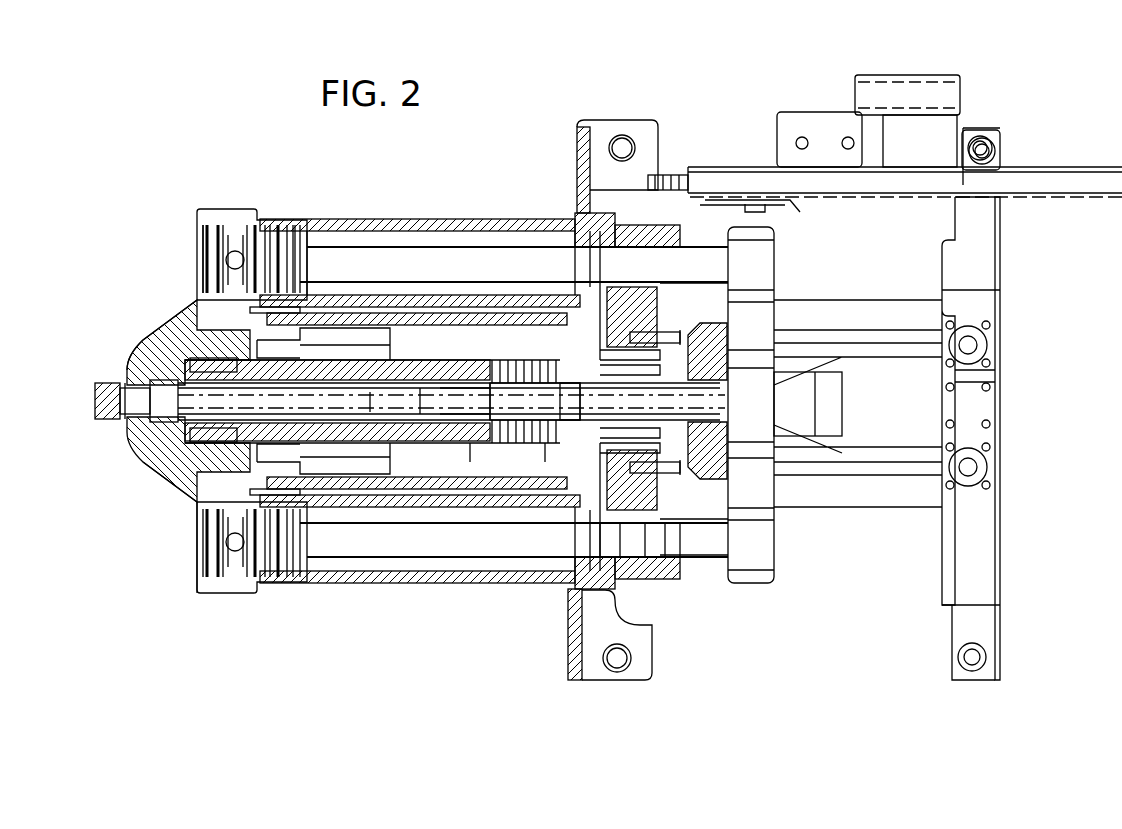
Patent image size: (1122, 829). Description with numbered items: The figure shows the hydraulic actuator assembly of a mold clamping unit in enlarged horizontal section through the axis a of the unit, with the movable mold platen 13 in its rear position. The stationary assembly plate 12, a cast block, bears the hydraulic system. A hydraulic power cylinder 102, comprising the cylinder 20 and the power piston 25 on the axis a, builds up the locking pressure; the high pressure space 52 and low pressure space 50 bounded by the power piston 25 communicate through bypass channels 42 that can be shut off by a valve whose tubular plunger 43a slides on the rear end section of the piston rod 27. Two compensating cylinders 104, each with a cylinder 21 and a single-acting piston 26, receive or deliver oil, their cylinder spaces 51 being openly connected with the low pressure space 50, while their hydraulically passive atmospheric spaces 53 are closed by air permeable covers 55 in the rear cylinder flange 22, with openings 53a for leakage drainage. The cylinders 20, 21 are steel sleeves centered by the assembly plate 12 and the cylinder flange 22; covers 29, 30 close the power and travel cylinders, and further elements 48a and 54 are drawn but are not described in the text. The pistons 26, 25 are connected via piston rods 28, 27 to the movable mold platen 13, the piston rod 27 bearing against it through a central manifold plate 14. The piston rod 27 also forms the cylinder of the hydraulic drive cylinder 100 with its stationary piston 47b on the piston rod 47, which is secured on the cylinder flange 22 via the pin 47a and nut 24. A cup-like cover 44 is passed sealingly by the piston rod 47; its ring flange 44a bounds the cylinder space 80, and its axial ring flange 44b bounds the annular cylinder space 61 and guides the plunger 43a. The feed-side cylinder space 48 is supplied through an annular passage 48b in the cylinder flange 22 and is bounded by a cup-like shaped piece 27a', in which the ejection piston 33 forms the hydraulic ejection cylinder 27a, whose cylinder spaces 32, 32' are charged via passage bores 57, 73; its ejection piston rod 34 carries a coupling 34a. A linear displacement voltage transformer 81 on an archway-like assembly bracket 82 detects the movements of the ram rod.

The assembly plate 12 is at (598, 140).
The movable mold platen 13 is at (884, 258).
The central manifold plate 14 is at (705, 330).
The cylinder 20 is at (400, 583).
The cylinder 21 is at (462, 219).
The cylinder flange 22 is at (162, 332).
The nut 24 is at (120, 413).
The power piston 25 is at (200, 515).
The piston 26 is at (300, 240).
The piston rod 27 is at (365, 540).
The hydraulic ejection cylinder 27a is at (514, 540).
The cup-like shaped piece 27a' is at (514, 301).
The piston rod 28 is at (530, 245).
The cover 29 is at (678, 432).
The cover 30 is at (655, 235).
The cylinder space 32 is at (611, 401).
The cylinder space 32' is at (494, 449).
The ejection piston 33 is at (545, 430).
The ejection piston rod 34 is at (780, 395).
The coupling 34a is at (828, 372).
The bypass channels 42 is at (330, 398).
The tubular plunger 43a is at (182, 455).
The cup-like cover 44 is at (171, 354).
The ring flange 44a is at (190, 366).
The axial ring flange 44b is at (230, 345).
The piston rod 47 is at (337, 416).
The pin 47a is at (112, 396).
The stationary piston 47b is at (500, 382).
The cylinder space 48 is at (538, 382).
The bearing inner race 48a is at (420, 388).
The annular passage 48b is at (175, 432).
The low pressure space 50 is at (320, 560).
The cylinder spaces 51 is at (412, 231).
The high pressure space 52 is at (215, 315).
The atmospheric spaces 53 is at (237, 228).
The openings 53a is at (233, 252).
The end plate 54 is at (565, 510).
The air permeable covers 55 is at (187, 569).
The passage bore 57 is at (684, 473).
The cylinder space 61 is at (222, 322).
The passage bore 73 is at (585, 366).
The cylinder space 80 is at (465, 430).
The linear displacement voltage transformer 81 is at (1057, 183).
The assembly bracket 82 is at (952, 92).
The hydraulic drive cylinder 100 is at (370, 392).
The hydraulic power cylinder 102 is at (300, 476).
The compensating cylinders 104 is at (307, 237).
The axis a is at (125, 403).